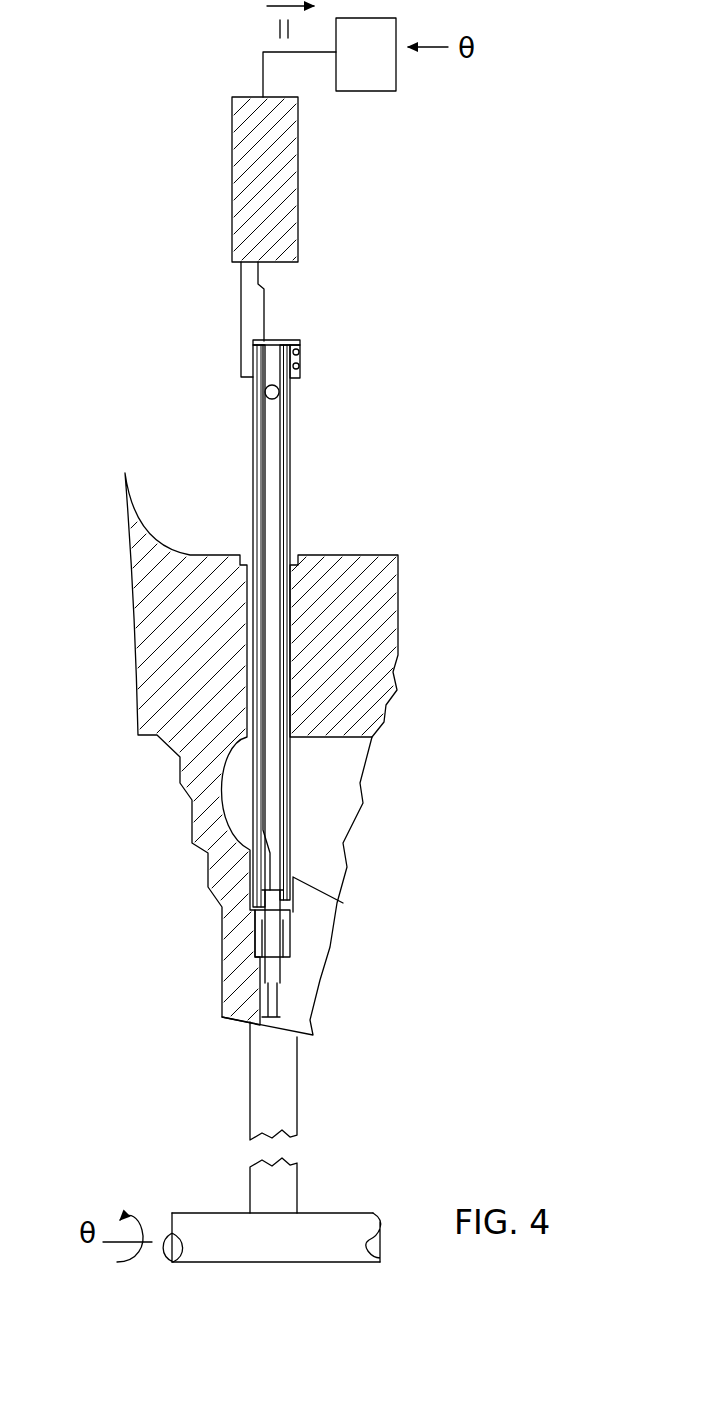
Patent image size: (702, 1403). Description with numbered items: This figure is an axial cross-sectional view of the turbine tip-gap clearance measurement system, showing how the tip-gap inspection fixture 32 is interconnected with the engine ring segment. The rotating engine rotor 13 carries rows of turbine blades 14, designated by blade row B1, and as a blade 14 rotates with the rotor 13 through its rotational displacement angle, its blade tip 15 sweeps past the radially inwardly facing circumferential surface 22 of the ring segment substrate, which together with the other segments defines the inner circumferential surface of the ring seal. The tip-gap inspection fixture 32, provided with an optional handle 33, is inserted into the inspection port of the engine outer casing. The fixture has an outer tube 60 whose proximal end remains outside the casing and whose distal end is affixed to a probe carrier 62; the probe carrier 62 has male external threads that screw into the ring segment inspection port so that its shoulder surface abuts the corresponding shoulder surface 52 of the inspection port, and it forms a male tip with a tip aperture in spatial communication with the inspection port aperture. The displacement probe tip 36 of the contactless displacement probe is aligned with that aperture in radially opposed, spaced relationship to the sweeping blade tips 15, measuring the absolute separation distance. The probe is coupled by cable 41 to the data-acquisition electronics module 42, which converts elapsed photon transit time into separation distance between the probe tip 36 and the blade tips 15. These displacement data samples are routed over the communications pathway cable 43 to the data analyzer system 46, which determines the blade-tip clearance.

The engine rotor 13 is at (232, 1247).
The turbine blade 14 is at (290, 1122).
The blade tip 15 is at (286, 1030).
The inwardly facing circumferential surface 22 is at (243, 1025).
The tip-gap inspection fixture 32 is at (310, 525).
The handle 33 is at (283, 389).
The displacement probe tip 36 is at (273, 1027).
The cable 41 is at (267, 328).
The data-acquisition electronics module 42 is at (298, 180).
The communications pathway cable 43 is at (307, 52).
The data analyzer system 46 is at (387, 91).
The shoulder surface of the inspection port 52 is at (292, 940).
The outer tube 60 is at (288, 477).
The probe carrier 62 is at (263, 783).
The blade row designation B1 is at (248, 1132).